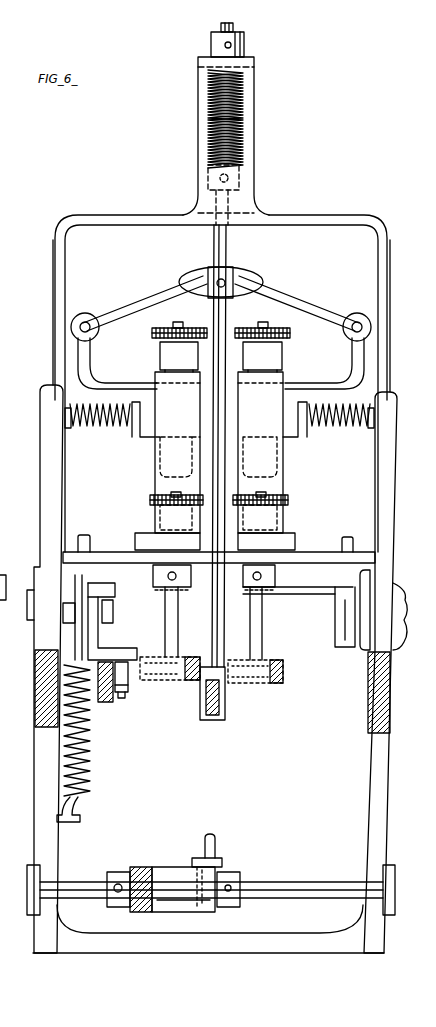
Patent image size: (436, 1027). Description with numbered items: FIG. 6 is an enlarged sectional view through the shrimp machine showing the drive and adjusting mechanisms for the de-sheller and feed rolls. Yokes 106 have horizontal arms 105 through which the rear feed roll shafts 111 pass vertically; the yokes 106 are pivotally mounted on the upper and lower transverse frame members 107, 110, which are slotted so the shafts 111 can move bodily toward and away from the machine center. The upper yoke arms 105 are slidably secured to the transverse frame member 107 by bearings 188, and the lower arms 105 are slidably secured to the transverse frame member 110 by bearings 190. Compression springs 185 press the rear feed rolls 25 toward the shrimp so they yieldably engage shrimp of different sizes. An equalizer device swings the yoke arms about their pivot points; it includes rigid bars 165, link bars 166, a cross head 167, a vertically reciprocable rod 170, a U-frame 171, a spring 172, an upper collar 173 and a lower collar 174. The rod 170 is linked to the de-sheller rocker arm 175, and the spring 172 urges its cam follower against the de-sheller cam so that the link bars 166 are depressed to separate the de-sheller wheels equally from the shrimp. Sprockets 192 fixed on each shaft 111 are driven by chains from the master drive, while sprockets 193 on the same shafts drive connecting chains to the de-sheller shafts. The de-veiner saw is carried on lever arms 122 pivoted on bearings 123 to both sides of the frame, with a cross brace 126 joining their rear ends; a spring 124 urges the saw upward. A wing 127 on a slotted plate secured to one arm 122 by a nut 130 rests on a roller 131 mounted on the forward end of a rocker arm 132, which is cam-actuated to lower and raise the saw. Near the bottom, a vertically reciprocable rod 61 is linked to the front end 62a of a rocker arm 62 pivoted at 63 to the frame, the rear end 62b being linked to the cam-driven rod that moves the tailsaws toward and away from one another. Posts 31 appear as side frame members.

The transverse frame member 107 is at (62, 385).
The side posts 31 is at (48, 426).
The upper collar 173 is at (244, 46).
The U-frame 171 is at (254, 101).
The spring 172 is at (243, 142).
The lower collar 174 is at (239, 178).
The vertically reciprocable rod 170 is at (227, 251).
The cross head 167 is at (212, 272).
The link bars 166 is at (130, 298).
The rigid bars 165 is at (98, 360).
The sprockets 192 is at (152, 338).
The rear feed roll shaft 111 is at (176, 324).
The bearings 188 is at (221, 357).
The horizontal arms 105 is at (288, 530).
The yoke 106 is at (162, 414).
The sprockets 193 is at (150, 498).
The compression springs 185 is at (110, 428).
The transverse frame member 110 is at (72, 555).
The bearings 190 is at (220, 602).
The cross brace 126 is at (115, 592).
The bearings 123 is at (88, 590).
The lever arms 122 is at (100, 636).
The nut 130 is at (113, 615).
The rocker arm 132 is at (108, 712).
The roller 131 is at (120, 700).
The wing 127 is at (148, 682).
The rear feed rolls 25 is at (172, 683).
The de-sheller rocker arm 175 is at (210, 722).
The spring 124 is at (92, 762).
The pivot 63 is at (290, 882).
The vertically reciprocable rod 61 is at (206, 832).
The front end of rocker arm 62a is at (208, 912).
The rear end of rocker arm 62b is at (142, 912).
The rocker arm 62 is at (195, 922).